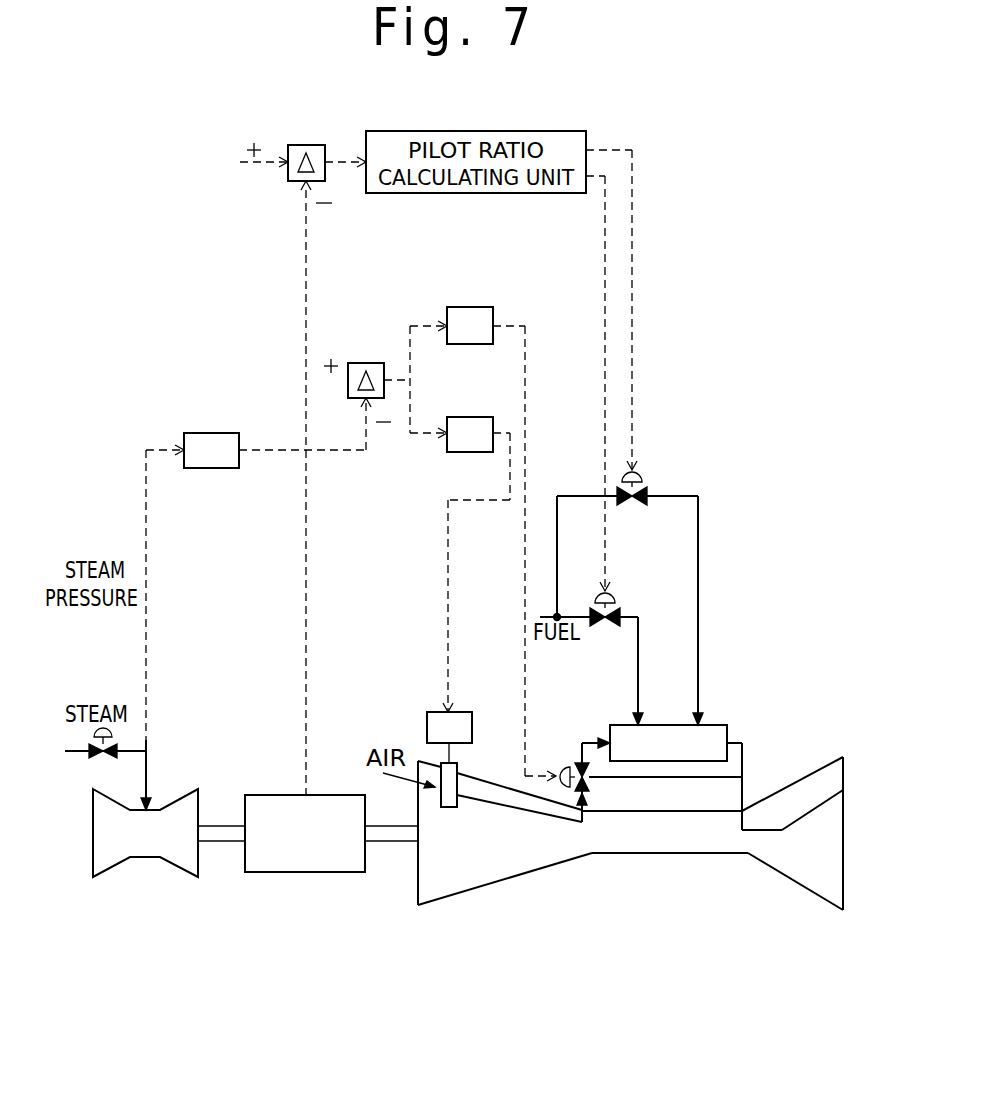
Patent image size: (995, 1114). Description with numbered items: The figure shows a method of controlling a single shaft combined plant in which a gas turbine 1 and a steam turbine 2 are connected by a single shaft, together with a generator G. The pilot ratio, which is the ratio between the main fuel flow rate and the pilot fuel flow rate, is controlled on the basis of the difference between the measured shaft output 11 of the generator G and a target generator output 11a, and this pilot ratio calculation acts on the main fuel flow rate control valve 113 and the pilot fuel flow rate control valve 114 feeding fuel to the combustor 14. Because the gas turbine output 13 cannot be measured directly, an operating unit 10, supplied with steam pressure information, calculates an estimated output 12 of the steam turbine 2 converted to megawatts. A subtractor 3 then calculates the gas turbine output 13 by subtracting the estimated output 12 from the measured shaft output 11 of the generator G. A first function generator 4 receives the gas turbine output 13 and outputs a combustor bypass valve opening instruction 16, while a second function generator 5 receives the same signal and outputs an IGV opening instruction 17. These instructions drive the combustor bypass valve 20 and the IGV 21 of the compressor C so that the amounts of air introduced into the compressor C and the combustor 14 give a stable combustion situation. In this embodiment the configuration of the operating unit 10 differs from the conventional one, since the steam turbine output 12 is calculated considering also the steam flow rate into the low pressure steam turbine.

The gas turbine 1 is at (787, 878).
The steam turbine 2 is at (147, 857).
The subtractor 3 is at (360, 363).
The first function generator 4 is at (470, 307).
The second function generator 5 is at (470, 417).
The operating unit 10 is at (211, 468).
The shaft output of the generator 11 is at (307, 625).
The target generator output 11a is at (258, 163).
The estimated output of the steam turbine 12 is at (275, 448).
The gas turbine output 13 is at (398, 378).
The combustor 14 is at (620, 725).
The combustor bypass valve opening instruction 16 is at (509, 324).
The IGV opening instruction 17 is at (447, 570).
The combustor bypass valve 20 is at (590, 783).
The IGV 21 is at (432, 712).
The main fuel flow rate control valve 113 is at (640, 478).
The pilot fuel flow rate control valve 114 is at (612, 597).
The generator G is at (330, 872).
The compressor C is at (455, 883).